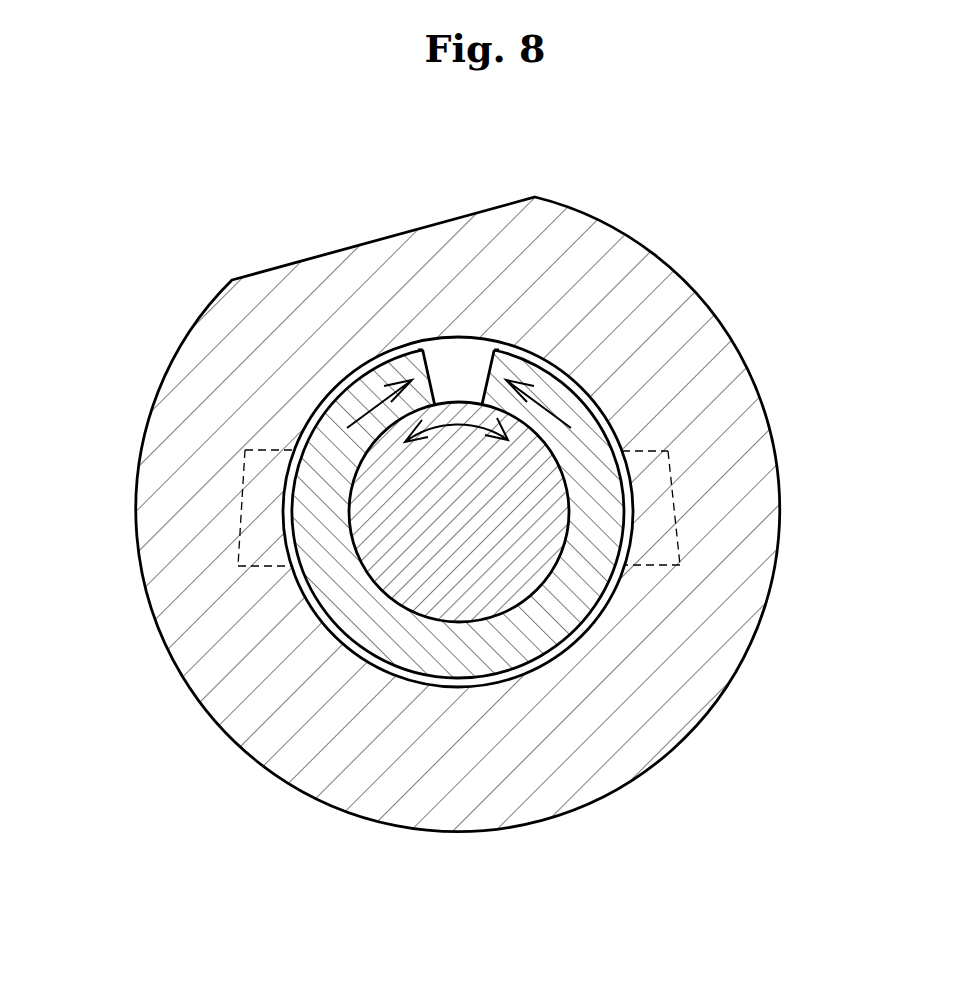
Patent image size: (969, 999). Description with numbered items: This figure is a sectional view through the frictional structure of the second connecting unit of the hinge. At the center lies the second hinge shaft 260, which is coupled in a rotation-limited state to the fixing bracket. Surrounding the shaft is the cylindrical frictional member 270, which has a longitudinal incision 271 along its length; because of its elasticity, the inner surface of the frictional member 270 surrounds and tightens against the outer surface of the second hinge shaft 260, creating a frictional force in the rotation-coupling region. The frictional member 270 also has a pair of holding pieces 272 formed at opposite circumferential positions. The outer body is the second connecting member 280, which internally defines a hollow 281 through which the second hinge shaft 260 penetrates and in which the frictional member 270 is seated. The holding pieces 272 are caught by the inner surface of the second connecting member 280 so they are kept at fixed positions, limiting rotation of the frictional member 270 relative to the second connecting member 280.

The second hinge shaft 260 is at (420, 572).
The frictional member 270 is at (322, 521).
The longitudinal incision 271 is at (430, 366).
The holding pieces 272 is at (247, 475).
The second connecting member 280 is at (665, 296).
The hollow 281 is at (584, 632).